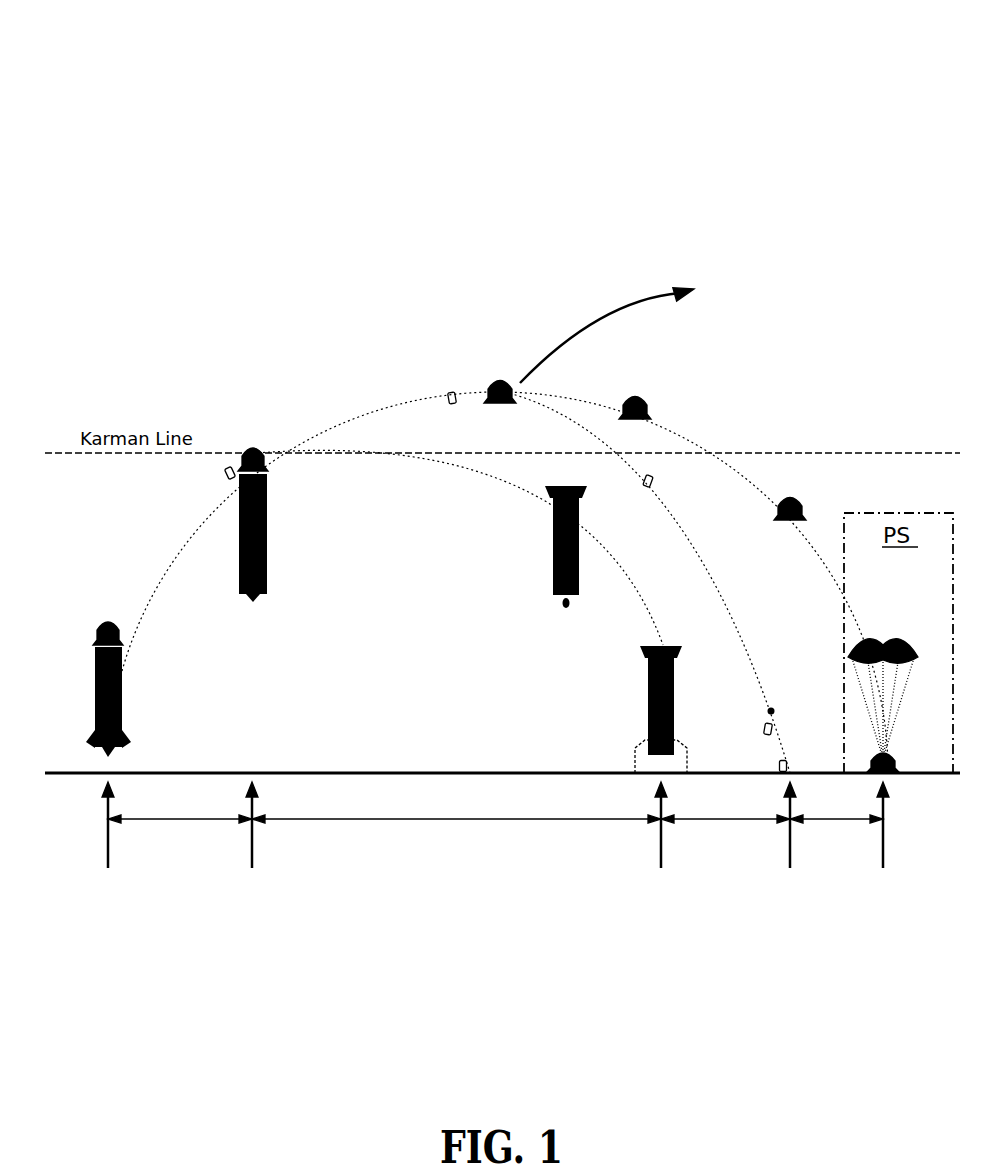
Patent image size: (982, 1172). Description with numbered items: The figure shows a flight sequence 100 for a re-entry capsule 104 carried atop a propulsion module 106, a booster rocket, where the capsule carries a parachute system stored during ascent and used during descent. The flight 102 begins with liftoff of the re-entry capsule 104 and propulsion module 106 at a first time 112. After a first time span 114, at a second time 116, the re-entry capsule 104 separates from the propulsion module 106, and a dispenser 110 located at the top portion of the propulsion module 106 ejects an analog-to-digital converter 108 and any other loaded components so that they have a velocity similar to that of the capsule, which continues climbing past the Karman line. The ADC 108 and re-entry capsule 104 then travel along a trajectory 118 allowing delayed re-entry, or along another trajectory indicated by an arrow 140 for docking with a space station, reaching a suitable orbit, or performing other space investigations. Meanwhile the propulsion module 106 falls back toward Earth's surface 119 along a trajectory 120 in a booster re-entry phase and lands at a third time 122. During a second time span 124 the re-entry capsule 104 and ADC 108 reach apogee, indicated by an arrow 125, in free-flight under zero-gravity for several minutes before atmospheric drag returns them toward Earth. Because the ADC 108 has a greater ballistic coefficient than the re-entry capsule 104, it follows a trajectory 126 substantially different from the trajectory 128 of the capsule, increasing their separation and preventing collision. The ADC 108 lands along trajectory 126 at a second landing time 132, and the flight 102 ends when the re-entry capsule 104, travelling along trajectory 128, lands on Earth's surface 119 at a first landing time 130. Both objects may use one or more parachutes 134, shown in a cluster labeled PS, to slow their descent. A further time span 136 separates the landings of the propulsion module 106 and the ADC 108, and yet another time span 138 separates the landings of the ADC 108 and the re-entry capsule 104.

The flight sequence 100 is at (778, 29).
The flight 102 is at (150, 584).
The re-entry capsule 104 is at (498, 378).
The propulsion module 106 is at (270, 558).
The analog-to-digital converter 108 is at (450, 392).
The dispenser 110 is at (243, 486).
The first time 112 is at (108, 843).
The first time span 114 is at (180, 830).
The second time 116 is at (252, 843).
The trajectory 118 is at (375, 405).
The Earth's surface 119 is at (370, 768).
The trajectory 120 is at (490, 468).
The third time 122 is at (661, 843).
The second time span 124 is at (456, 830).
The arrow 125 is at (477, 350).
The trajectory 126 is at (735, 630).
The trajectory 128 is at (682, 440).
The first landing time 130 is at (883, 843).
The second landing time 132 is at (790, 843).
The parachute 134 is at (880, 640).
The further time span 136 is at (725, 830).
The time span 138 is at (836, 830).
The arrow 140 is at (625, 329).